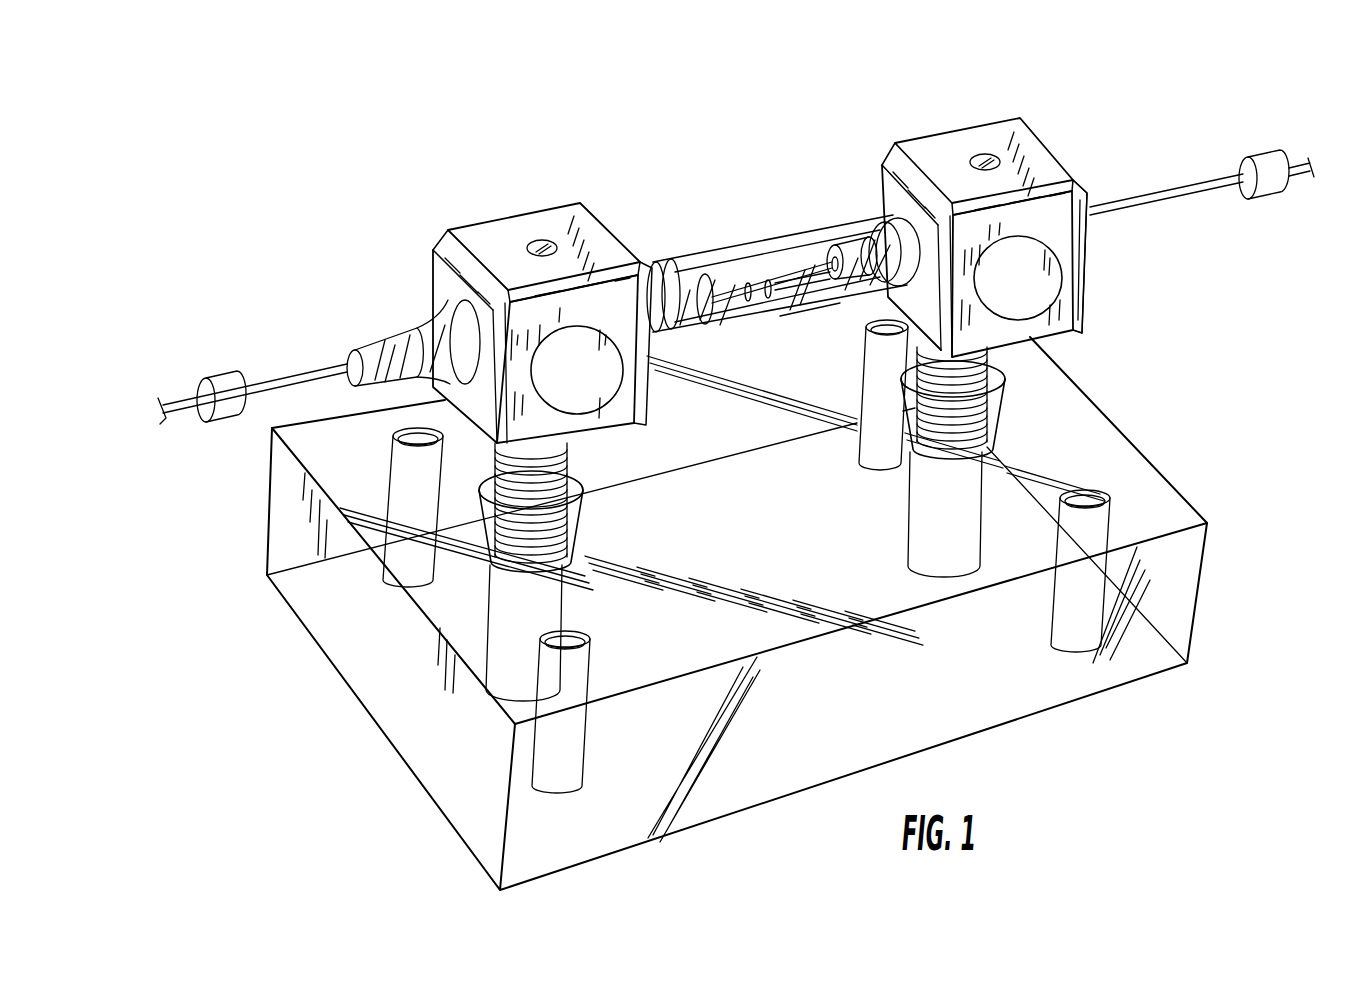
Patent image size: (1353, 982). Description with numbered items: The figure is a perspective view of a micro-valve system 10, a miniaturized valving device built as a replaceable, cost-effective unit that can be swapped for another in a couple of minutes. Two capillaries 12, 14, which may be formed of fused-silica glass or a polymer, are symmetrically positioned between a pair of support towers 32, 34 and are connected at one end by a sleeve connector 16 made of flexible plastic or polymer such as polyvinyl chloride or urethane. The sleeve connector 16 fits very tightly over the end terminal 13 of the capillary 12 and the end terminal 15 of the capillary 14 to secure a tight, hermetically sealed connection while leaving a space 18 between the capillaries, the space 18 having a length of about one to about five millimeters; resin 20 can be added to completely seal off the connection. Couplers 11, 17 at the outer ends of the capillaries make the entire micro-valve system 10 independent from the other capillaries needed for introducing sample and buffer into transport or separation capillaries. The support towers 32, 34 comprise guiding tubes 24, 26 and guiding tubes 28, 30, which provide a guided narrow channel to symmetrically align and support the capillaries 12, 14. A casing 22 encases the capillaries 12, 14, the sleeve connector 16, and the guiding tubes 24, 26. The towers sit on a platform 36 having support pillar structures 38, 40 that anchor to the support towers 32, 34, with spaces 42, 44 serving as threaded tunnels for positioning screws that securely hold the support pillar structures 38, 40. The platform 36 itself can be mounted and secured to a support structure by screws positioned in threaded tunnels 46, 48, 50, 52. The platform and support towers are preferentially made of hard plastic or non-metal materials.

The micro-valve system 10 is at (796, 84).
The coupler 11 is at (218, 382).
The capillary 12 is at (273, 375).
The end terminal 13 is at (747, 290).
The capillary 14 is at (1197, 178).
The end terminal 15 is at (818, 255).
The sleeve connector 16 is at (808, 268).
The coupler 17 is at (1262, 158).
The space 18 is at (770, 300).
The resin 20 is at (765, 292).
The casing 22 is at (820, 300).
The guiding tube 24 is at (690, 282).
The guiding tube 26 is at (848, 247).
The guiding tube 28 is at (370, 343).
The guiding tube 30 is at (1088, 190).
The support tower 32 is at (515, 218).
The support tower 34 is at (1005, 128).
The platform 36 is at (1123, 433).
The support pillar structure 38 is at (577, 472).
The support pillar structure 40 is at (932, 447).
The space 42 is at (502, 627).
The space 44 is at (938, 543).
The threaded tunnel 46 is at (400, 480).
The threaded tunnel 48 is at (565, 728).
The threaded tunnel 50 is at (872, 380).
The threaded tunnel 52 is at (1080, 583).